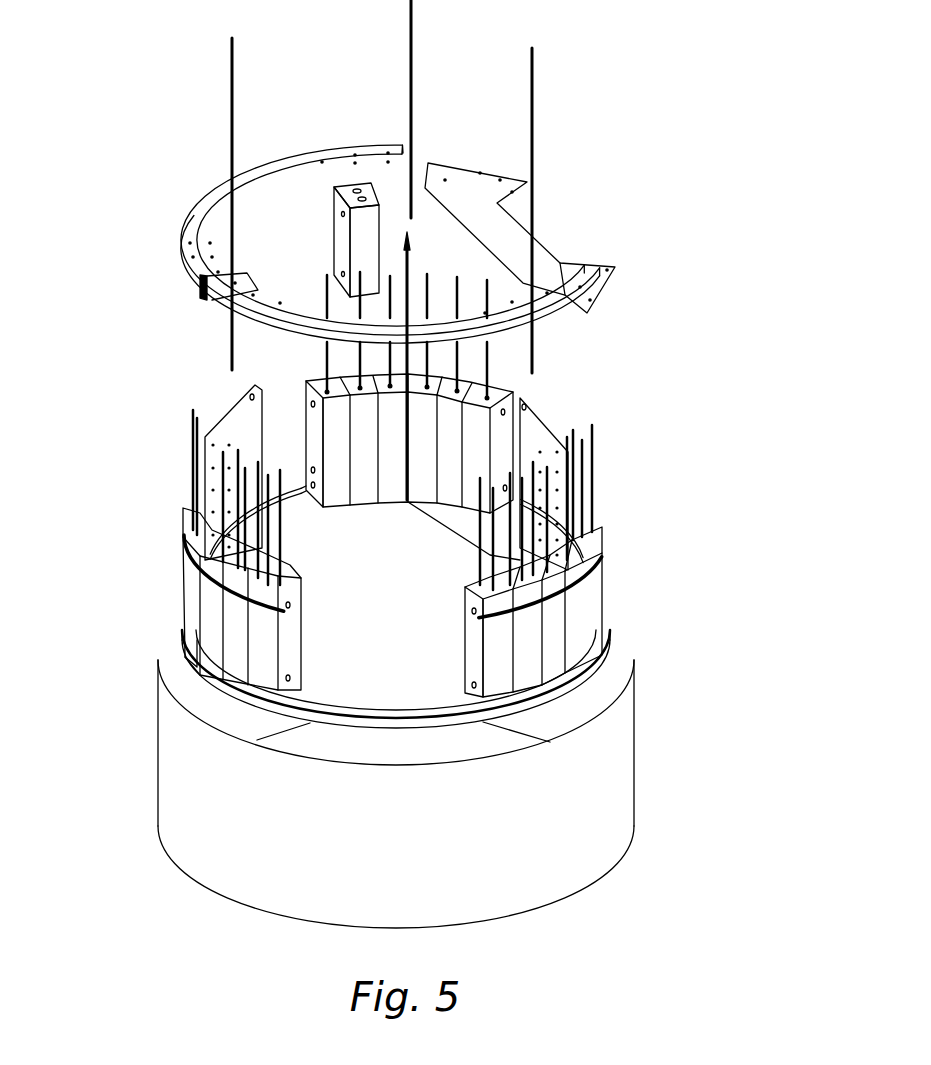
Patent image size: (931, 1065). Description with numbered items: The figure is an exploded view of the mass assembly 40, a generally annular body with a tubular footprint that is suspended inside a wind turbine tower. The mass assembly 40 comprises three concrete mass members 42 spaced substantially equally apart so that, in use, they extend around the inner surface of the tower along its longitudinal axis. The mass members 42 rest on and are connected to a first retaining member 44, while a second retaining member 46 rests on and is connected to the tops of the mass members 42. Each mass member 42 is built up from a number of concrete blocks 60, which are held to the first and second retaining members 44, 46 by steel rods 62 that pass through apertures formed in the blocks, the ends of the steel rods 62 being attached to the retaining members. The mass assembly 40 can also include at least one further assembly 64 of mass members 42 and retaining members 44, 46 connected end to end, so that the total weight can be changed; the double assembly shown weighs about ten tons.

The mass assembly 40 is at (697, 163).
The mass member 42 is at (530, 386).
The first retaining member 44 is at (347, 694).
The second retaining member 46 is at (563, 309).
The concrete block 60 is at (592, 575).
The steel rod 62 is at (597, 447).
The further assembly 64 is at (608, 785).